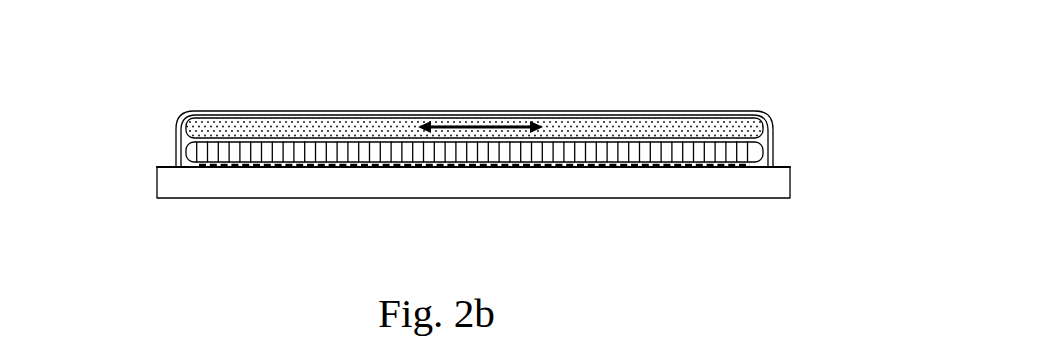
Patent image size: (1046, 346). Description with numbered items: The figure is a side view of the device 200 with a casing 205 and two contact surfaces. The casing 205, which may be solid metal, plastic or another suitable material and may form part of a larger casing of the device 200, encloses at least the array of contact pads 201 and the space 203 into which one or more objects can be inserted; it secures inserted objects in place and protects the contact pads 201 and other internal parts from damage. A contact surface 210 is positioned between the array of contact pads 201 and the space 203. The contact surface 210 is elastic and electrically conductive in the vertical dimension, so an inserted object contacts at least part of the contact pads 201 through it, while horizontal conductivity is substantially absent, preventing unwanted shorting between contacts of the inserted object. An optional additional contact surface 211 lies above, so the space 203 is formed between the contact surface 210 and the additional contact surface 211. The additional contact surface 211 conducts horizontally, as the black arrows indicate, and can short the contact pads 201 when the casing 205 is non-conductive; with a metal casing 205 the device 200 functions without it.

The device 200 is at (578, 213).
The array of contact pads 201 is at (268, 163).
The space for one or more insertable objects 203 is at (762, 133).
The casing 205 is at (645, 113).
The contact surface 210 is at (187, 147).
The additional contact surface 211 is at (193, 128).